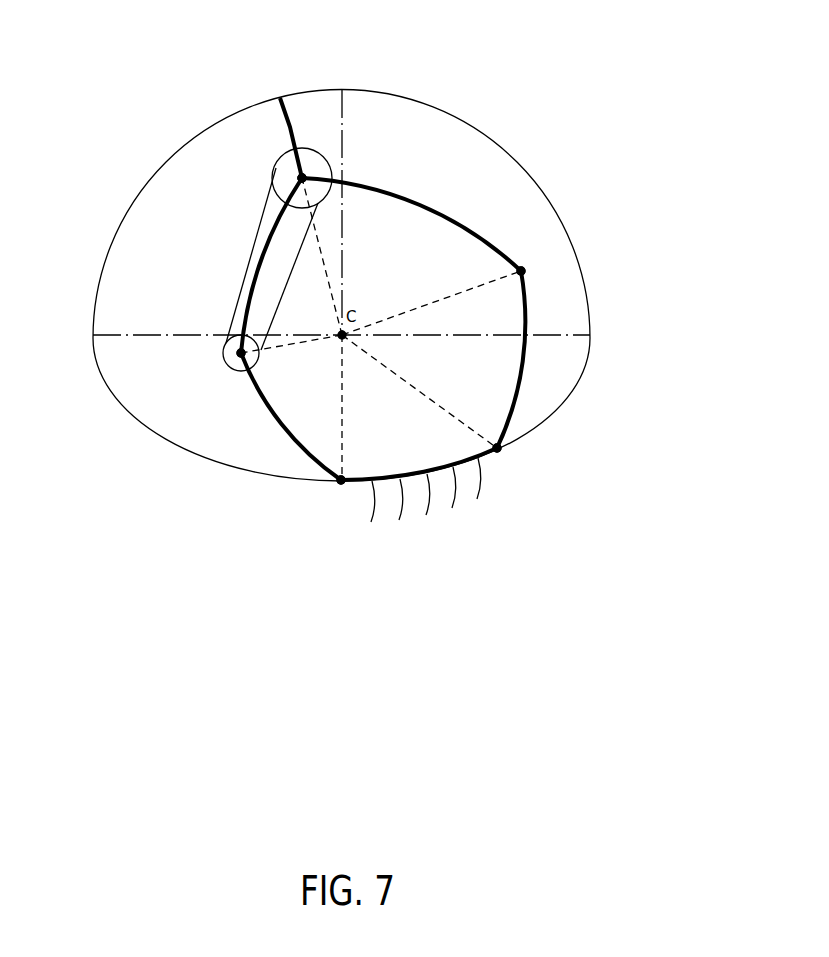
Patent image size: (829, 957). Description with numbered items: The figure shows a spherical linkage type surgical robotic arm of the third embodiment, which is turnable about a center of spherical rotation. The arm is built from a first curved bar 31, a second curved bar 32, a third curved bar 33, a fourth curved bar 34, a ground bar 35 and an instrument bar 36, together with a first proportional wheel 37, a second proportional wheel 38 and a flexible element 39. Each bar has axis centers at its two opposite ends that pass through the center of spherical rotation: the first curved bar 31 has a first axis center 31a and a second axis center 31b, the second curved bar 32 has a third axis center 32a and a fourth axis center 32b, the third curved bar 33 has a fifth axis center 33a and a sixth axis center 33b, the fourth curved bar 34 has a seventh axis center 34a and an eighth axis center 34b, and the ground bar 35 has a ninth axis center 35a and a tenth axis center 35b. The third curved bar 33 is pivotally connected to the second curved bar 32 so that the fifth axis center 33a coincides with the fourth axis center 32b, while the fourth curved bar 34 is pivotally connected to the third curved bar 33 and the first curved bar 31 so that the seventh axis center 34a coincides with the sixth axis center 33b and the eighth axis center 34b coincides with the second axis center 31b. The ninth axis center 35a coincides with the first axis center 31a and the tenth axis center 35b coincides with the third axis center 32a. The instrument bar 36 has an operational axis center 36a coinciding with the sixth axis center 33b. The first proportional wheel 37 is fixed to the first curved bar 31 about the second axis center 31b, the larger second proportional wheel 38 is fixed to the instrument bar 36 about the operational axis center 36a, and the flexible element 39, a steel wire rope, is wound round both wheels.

The first curved bar 31 is at (295, 438).
The first axis center 31a is at (342, 447).
The second axis center 31b is at (308, 342).
The second curved bar 32 is at (525, 357).
The third axis center 32a is at (457, 421).
The fourth axis center 32b is at (460, 292).
The third curved bar 33 is at (418, 203).
The fifth axis center 33a is at (521, 271).
The sixth axis center 33b is at (325, 257).
The fourth curved bar 34 is at (263, 257).
The seventh axis center 34a is at (302, 178).
The eighth axis center 34b is at (241, 353).
The ground bar 35 is at (483, 456).
The ninth axis center 35a is at (341, 480).
The tenth axis center 35b is at (497, 448).
The instrument bar 36 is at (292, 118).
The operational axis center 36a is at (302, 178).
The first proportional wheel 37 is at (223, 357).
The second proportional wheel 38 is at (277, 162).
The flexible element 39 is at (239, 290).